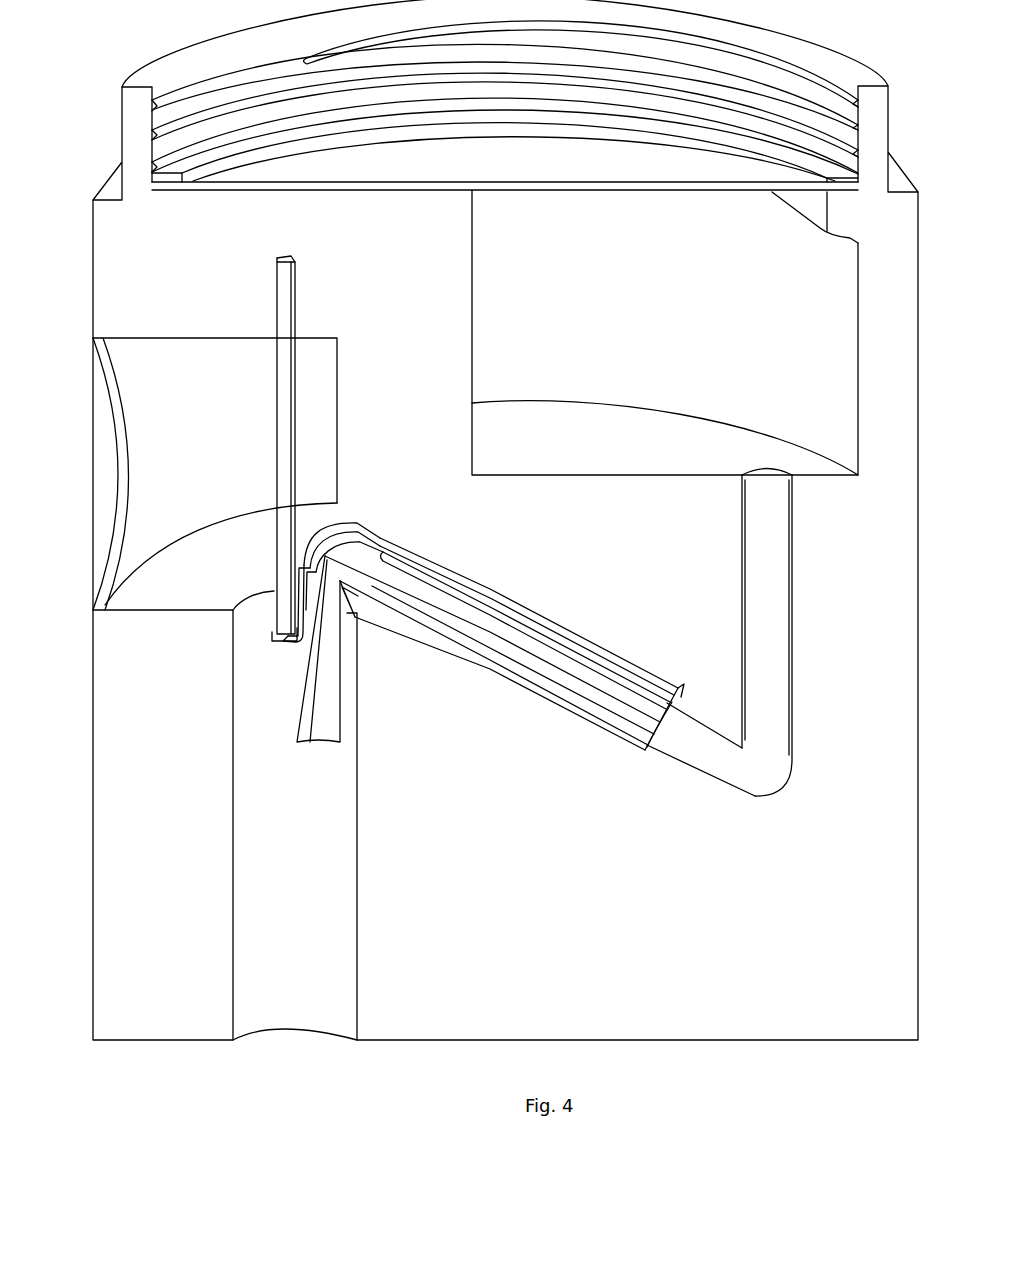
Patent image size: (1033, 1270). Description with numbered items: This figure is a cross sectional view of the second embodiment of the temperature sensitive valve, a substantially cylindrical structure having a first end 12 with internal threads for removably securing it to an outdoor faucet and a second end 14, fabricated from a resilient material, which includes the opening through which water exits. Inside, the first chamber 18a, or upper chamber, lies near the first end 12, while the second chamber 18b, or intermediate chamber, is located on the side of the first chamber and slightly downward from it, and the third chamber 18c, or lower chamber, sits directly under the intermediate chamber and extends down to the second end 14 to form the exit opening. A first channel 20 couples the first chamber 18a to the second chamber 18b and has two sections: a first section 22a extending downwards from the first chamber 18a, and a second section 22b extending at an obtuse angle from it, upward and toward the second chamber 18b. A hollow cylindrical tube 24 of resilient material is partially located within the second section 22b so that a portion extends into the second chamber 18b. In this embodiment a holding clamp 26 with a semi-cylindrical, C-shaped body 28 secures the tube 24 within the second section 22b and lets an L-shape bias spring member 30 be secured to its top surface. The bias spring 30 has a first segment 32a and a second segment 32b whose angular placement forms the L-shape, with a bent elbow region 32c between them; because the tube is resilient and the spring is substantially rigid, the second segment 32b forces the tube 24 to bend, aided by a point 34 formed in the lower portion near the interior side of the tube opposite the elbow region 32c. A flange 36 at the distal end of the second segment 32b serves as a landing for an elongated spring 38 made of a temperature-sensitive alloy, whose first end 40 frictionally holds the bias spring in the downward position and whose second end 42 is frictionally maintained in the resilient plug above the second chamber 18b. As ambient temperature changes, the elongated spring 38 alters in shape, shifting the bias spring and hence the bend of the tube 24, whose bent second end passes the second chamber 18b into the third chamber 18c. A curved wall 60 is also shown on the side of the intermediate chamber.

The first end 12 is at (175, 145).
The second end 14 is at (810, 1015).
The first chamber 18a is at (790, 352).
The second chamber 18b is at (188, 492).
The third chamber 18c is at (328, 932).
The first channel 20 is at (773, 718).
The first section 22a is at (780, 593).
The second section 22b is at (710, 765).
The hollow cylindrical tube 24 is at (322, 746).
The holding clamp 26 is at (675, 696).
The semi-cylindrical body 28 is at (632, 690).
The L-shape bias spring member 30 is at (472, 583).
The first segment 32a is at (447, 563).
The second segment 32b is at (305, 578).
The bent elbow region 32c is at (343, 523).
The point 34 is at (357, 605).
The flange 36 is at (292, 648).
The elongated spring 38 is at (280, 408).
The first end 40 is at (270, 622).
The second end 42 is at (280, 275).
The curved wall 60 is at (118, 413).